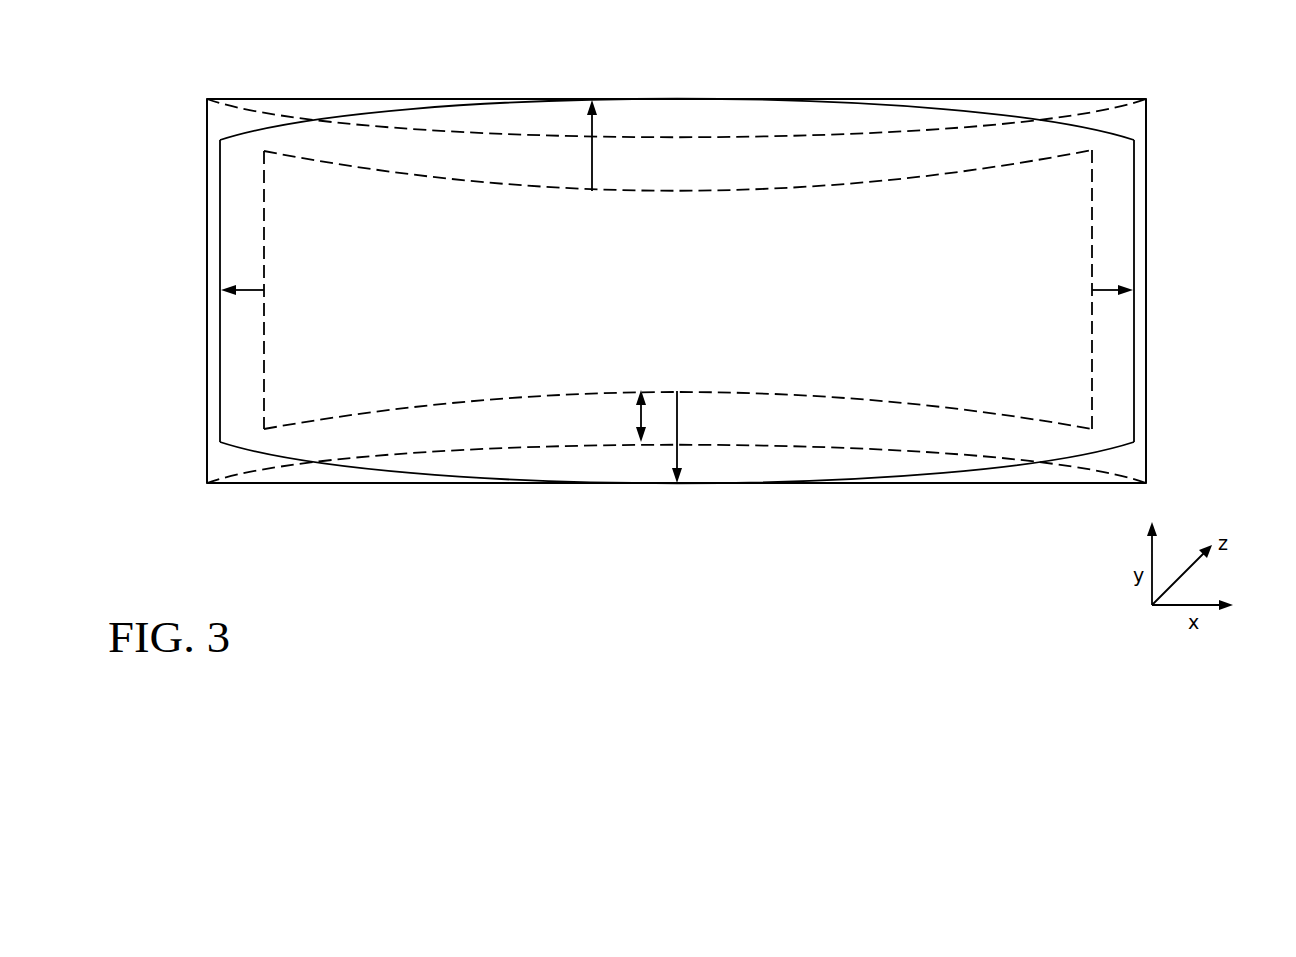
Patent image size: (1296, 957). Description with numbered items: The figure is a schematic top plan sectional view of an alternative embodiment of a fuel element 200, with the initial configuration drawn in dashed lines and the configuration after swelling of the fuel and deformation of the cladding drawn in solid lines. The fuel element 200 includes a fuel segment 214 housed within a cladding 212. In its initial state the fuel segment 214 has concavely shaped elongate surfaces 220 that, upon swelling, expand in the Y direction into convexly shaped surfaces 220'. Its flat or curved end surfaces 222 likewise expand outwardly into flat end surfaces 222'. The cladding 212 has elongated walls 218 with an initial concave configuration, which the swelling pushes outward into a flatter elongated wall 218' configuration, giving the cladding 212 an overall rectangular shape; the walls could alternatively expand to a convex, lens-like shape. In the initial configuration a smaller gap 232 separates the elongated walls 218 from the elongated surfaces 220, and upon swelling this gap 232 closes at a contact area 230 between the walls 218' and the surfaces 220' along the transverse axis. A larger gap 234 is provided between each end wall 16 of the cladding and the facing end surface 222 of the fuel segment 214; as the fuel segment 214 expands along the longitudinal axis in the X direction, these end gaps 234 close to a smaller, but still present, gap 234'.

The fuel element 200 is at (725, 508).
The cladding 212 is at (1147, 115).
The end wall 16 is at (205, 243).
The fuel segment 214 is at (1005, 397).
The elongated wall 218 is at (676, 289).
The flatter elongated wall 218' is at (676, 288).
The concavely shaped elongate surface 220 is at (678, 298).
The convexly shaped surface 220' is at (677, 300).
The end surface 222 is at (684, 289).
The flat end surface 222' is at (683, 291).
The contact area 230 is at (697, 98).
The smaller gap 232 is at (790, 170).
The larger gap 234 is at (674, 187).
The smaller gap 234' is at (687, 301).